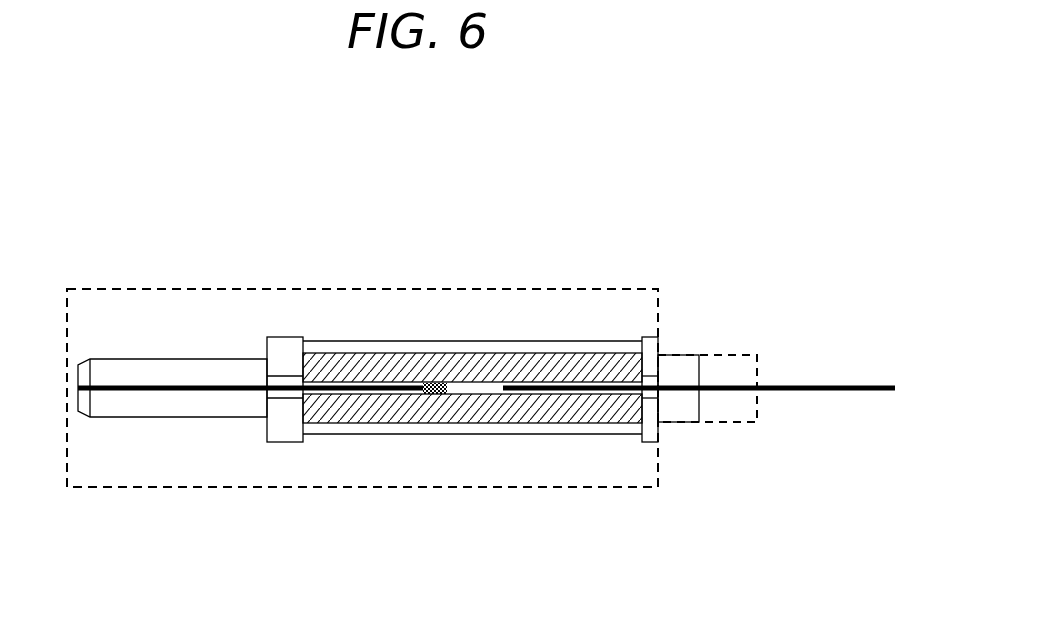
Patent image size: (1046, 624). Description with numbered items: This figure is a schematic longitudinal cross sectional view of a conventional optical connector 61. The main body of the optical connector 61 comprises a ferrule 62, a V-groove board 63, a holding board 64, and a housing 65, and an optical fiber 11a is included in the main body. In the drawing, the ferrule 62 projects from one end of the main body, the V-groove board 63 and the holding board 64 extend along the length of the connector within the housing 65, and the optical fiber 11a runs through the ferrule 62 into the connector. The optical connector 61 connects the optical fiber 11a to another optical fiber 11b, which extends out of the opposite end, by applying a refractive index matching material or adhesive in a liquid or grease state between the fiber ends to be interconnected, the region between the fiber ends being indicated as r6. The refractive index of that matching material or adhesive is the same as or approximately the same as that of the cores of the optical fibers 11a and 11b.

The optical connector 61 is at (665, 219).
The ferrule 62 is at (192, 358).
The V-groove board 63 is at (587, 413).
The holding board 64 is at (353, 368).
The housing 65 is at (660, 317).
The optical fiber 11a is at (223, 392).
The optical fiber 11b is at (795, 387).
The gap region r6 is at (433, 395).